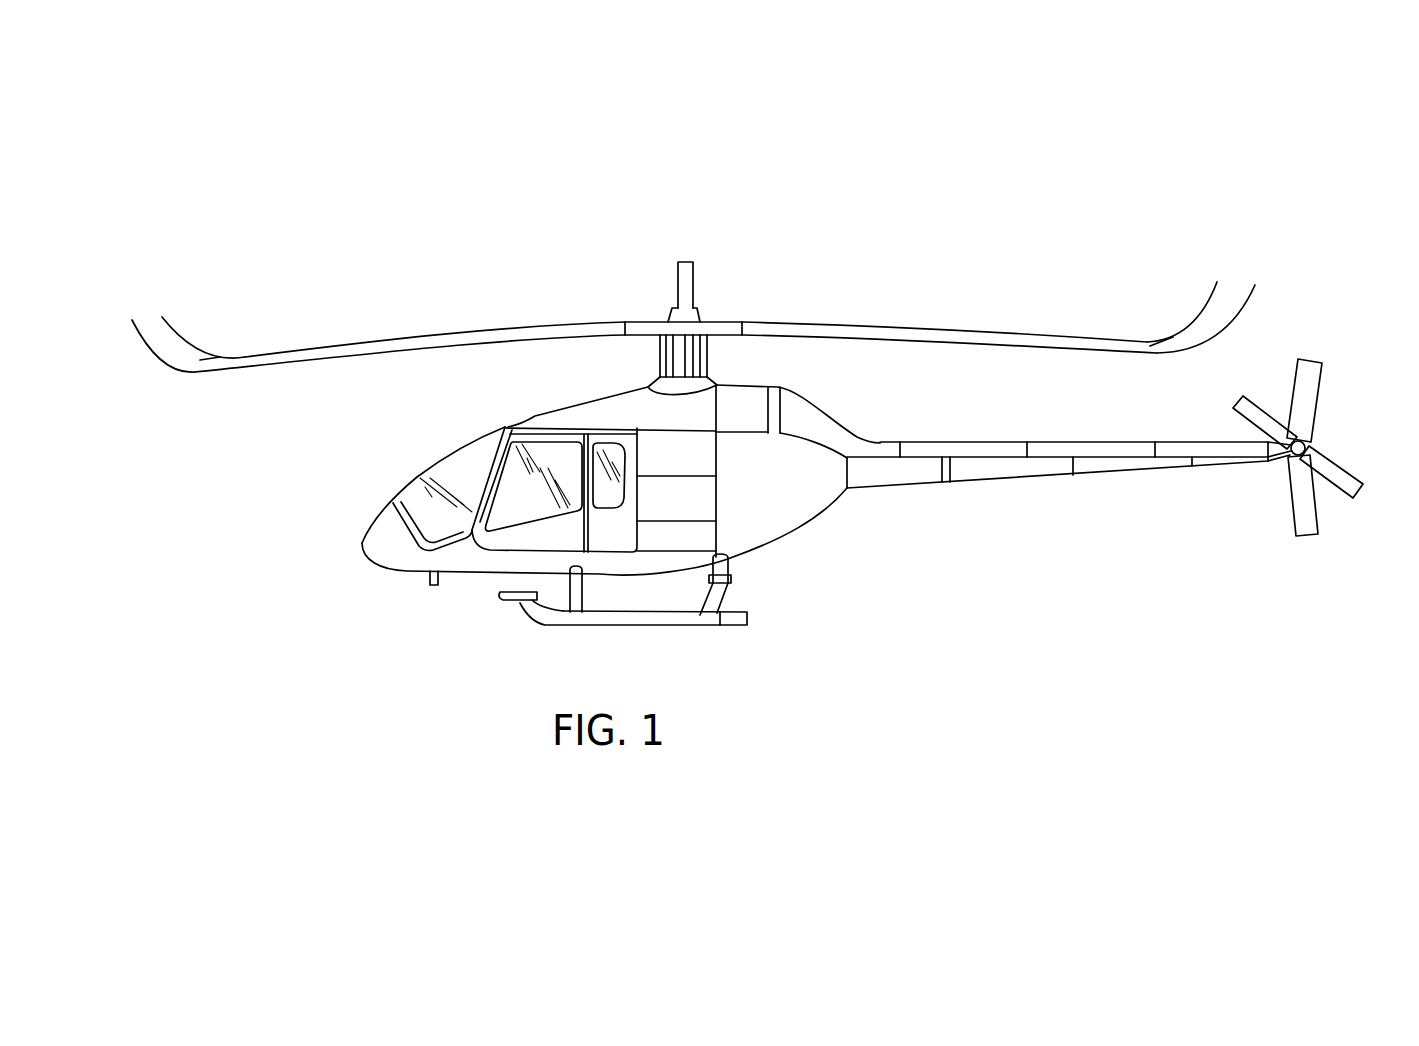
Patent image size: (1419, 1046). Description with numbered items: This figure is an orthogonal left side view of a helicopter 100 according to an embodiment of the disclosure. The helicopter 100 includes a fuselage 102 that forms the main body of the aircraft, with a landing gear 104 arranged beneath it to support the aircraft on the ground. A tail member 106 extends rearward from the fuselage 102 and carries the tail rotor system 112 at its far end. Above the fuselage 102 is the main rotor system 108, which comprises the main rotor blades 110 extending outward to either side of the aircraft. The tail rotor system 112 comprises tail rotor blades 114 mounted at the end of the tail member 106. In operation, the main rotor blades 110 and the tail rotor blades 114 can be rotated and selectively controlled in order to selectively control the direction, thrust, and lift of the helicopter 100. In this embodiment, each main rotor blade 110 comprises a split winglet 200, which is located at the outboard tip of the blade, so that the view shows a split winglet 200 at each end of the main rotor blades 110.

The helicopter 100 is at (514, 108).
The fuselage 102 is at (760, 517).
The landing gear 104 is at (682, 627).
The tail member 106 is at (1127, 473).
The main rotor system 108 is at (653, 291).
The main rotor blades 110 is at (337, 343).
The tail rotor system 112 is at (1316, 424).
The tail rotor blades 114 is at (1353, 473).
The split winglet 200 is at (175, 401).